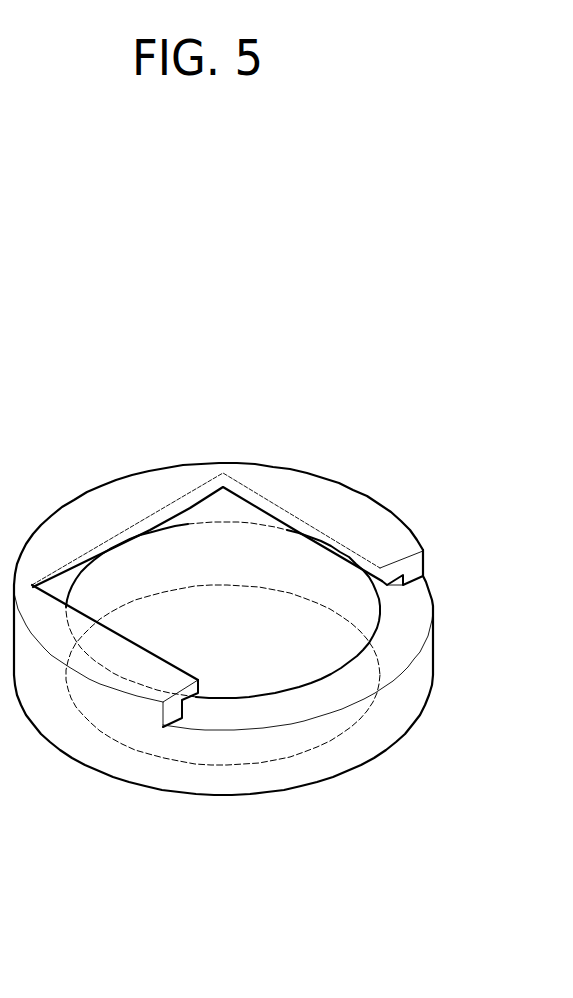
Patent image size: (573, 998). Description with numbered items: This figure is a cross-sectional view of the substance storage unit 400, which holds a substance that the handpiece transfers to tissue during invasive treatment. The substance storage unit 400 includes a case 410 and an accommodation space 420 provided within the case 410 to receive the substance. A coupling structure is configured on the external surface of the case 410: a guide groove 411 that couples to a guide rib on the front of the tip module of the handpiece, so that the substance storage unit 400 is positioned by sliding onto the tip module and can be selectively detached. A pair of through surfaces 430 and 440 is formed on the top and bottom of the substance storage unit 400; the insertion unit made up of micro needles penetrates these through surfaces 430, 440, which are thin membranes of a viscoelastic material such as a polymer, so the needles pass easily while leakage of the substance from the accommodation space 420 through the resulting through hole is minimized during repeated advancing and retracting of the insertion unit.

The substance storage unit 400 is at (386, 427).
The case 410 is at (403, 633).
The guide groove 411 is at (388, 586).
The accommodation space 420 is at (204, 610).
The through surface 430 is at (292, 671).
The through surface 440 is at (287, 757).